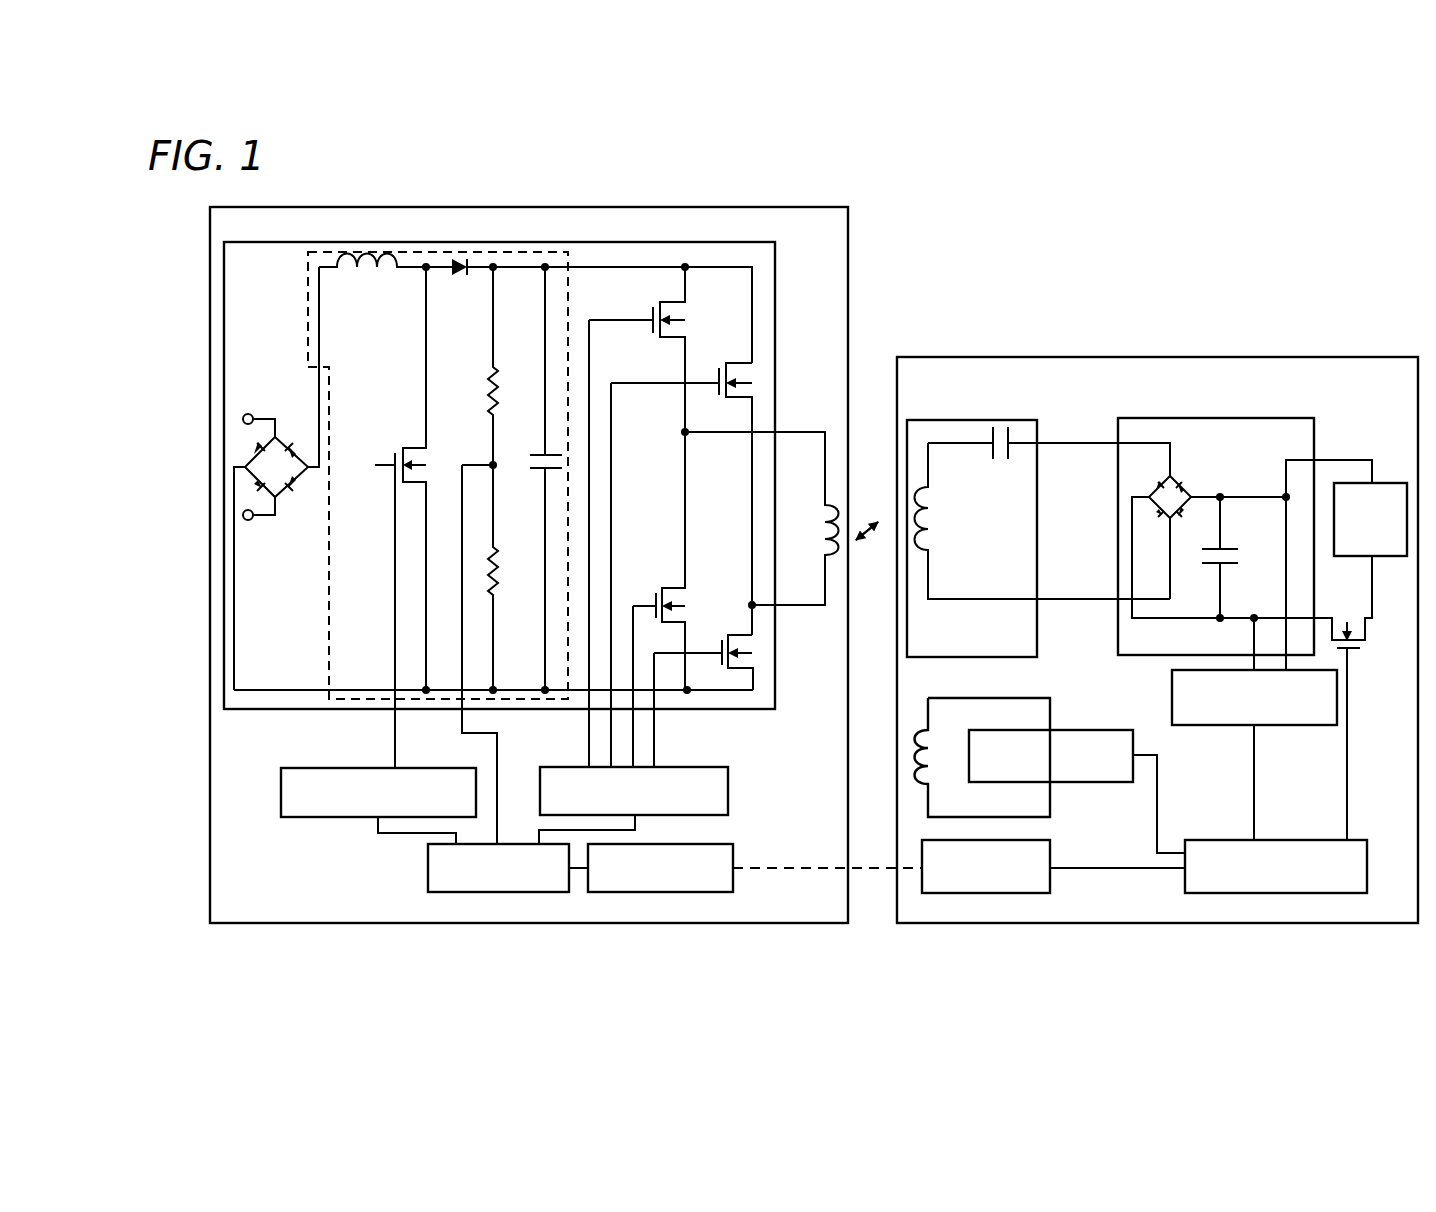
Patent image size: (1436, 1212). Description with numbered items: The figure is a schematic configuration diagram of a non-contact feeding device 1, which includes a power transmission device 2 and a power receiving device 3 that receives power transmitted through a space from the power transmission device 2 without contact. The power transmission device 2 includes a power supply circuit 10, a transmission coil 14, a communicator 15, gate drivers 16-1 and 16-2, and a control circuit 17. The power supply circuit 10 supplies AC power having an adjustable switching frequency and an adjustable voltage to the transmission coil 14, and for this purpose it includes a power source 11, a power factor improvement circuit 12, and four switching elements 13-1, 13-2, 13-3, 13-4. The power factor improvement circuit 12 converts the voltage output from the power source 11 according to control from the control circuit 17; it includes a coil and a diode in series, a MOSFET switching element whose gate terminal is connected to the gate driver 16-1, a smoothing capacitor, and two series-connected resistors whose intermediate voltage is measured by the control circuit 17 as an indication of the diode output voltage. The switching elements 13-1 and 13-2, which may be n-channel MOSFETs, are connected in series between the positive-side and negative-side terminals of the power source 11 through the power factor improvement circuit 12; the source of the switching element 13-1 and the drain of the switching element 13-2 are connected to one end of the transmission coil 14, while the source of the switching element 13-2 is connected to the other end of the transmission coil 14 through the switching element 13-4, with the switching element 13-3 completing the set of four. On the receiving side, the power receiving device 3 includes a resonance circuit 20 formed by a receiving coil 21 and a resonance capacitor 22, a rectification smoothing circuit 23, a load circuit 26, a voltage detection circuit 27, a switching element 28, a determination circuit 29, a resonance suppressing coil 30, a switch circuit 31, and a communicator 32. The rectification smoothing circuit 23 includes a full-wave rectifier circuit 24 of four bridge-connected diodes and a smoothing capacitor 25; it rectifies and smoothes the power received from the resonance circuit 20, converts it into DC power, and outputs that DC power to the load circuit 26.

The non-contact feeding device 1 is at (1333, 328).
The power transmission device 2 is at (795, 922).
The power receiving device 3 is at (1397, 923).
The power supply circuit 10 is at (723, 710).
The power source 11 is at (293, 510).
The power factor improvement circuit 12 is at (520, 699).
The switching element 13-1 is at (658, 300).
The switching element 13-2 is at (672, 587).
The switching element 13-3 is at (752, 372).
The switching element 13-4 is at (757, 645).
The transmission coil 14 is at (810, 488).
The communicator 15 is at (658, 892).
The gate driver 16-1 is at (318, 817).
The gate driver 16-2 is at (728, 790).
The control circuit 17 is at (495, 893).
The resonance circuit 20 is at (1038, 555).
The receiving coil 21 is at (942, 520).
The resonance capacitor 22 is at (1000, 463).
The rectification smoothing circuit 23 is at (1216, 568).
The full-wave rectifier circuit 24 is at (1187, 477).
The smoothing capacitor 25 is at (1202, 557).
The load circuit 26 is at (1387, 483).
The voltage detection circuit 27 is at (1302, 725).
The switching element 28 is at (1368, 645).
The determination circuit 29 is at (1245, 893).
The resonance suppressing coil 30 is at (942, 757).
The switch circuit 31 is at (1105, 782).
The communicator 32 is at (997, 893).